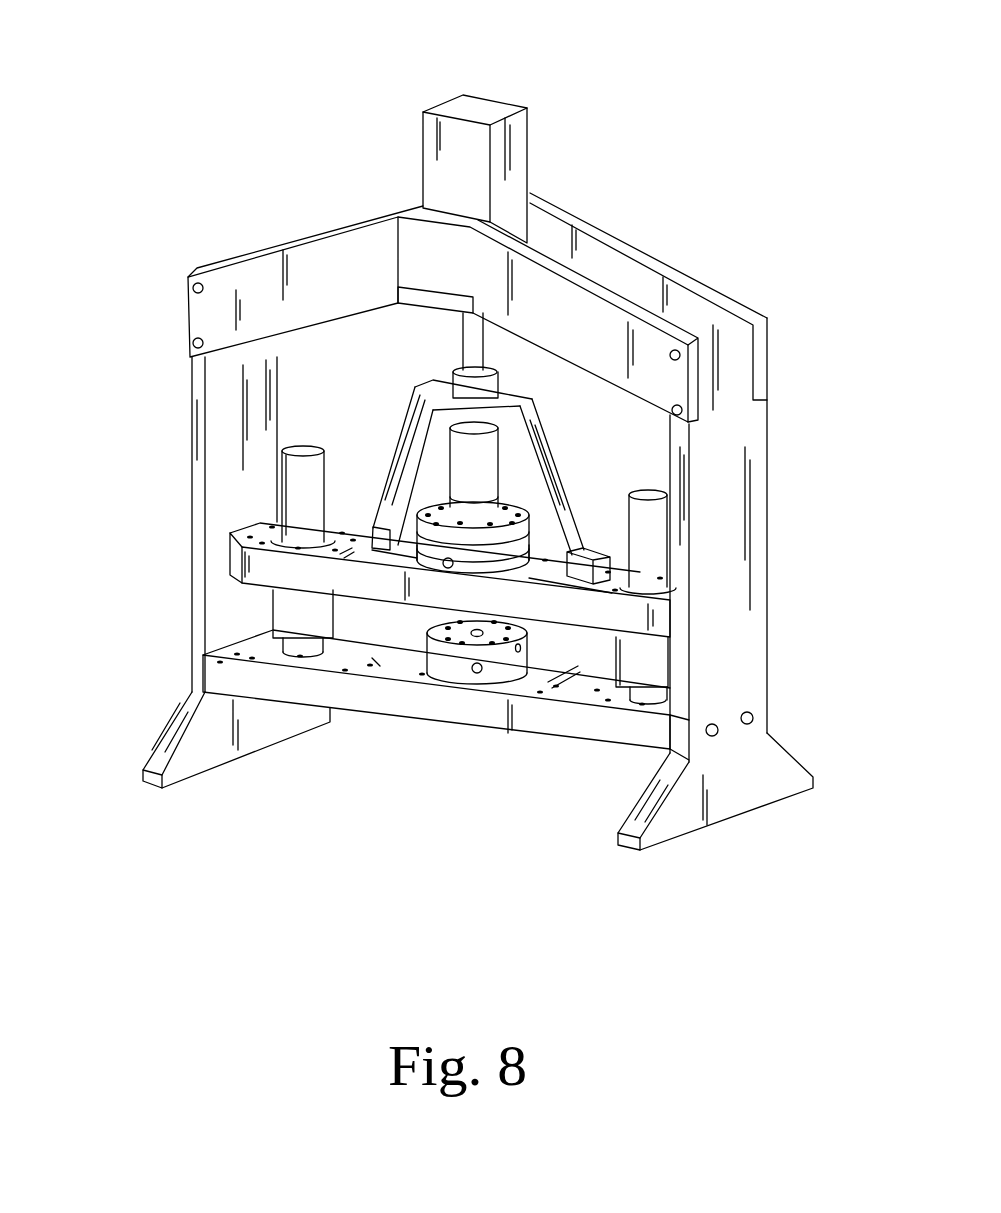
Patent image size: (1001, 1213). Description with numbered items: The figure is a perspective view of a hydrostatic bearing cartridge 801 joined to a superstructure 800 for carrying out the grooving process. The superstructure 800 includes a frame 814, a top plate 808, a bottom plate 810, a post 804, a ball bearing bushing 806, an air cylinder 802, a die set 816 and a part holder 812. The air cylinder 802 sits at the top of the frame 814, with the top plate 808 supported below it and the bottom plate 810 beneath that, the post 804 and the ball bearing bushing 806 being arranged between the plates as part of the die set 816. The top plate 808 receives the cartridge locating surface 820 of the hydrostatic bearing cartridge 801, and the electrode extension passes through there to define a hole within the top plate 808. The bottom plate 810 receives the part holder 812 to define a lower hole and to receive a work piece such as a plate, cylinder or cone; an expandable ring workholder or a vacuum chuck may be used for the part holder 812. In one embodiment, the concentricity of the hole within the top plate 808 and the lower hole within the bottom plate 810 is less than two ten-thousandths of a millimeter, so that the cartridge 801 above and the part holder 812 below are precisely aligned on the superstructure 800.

The superstructure 800 is at (206, 130).
The hydrostatic bearing cartridge 801 is at (507, 542).
The air cylinder 802 is at (522, 142).
The post 804 is at (300, 478).
The ball bearing bushing 806 is at (283, 600).
The top plate 808 is at (612, 620).
The bottom plate 810 is at (650, 735).
The part holder 812 is at (475, 643).
The frame 814 is at (745, 658).
The die set 816 is at (232, 651).
The cartridge locating surface 820 is at (468, 563).